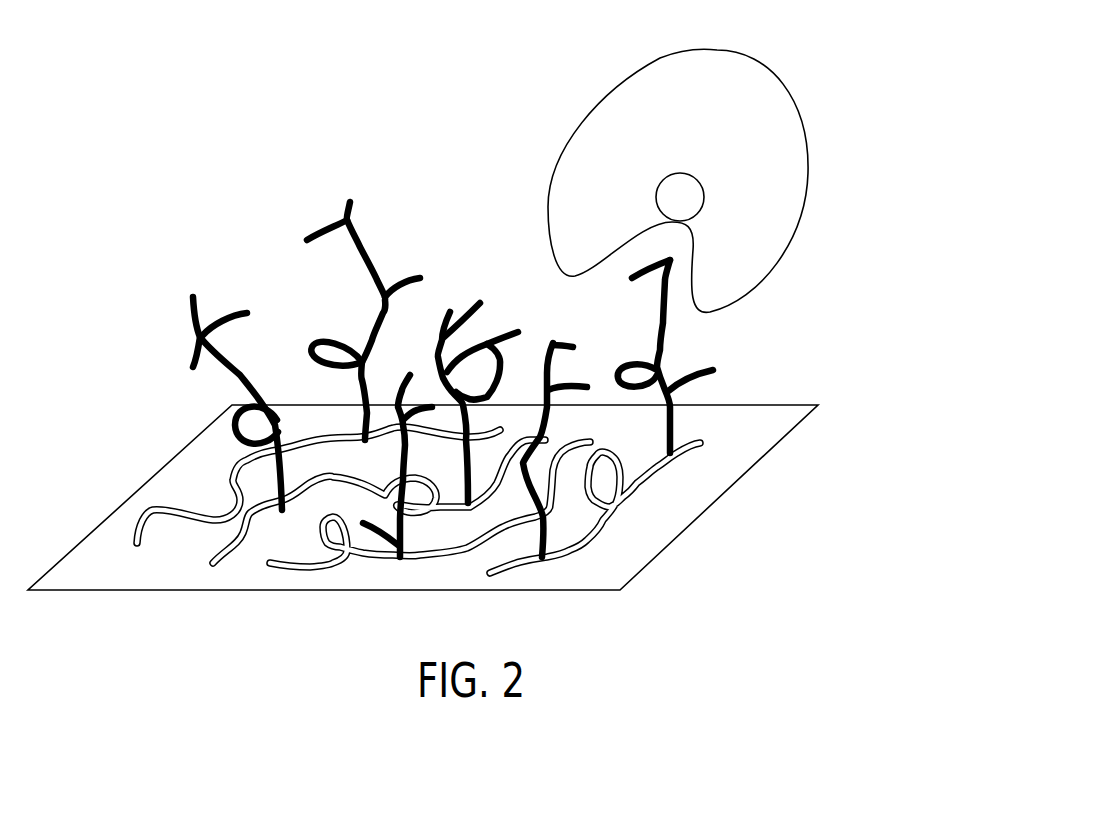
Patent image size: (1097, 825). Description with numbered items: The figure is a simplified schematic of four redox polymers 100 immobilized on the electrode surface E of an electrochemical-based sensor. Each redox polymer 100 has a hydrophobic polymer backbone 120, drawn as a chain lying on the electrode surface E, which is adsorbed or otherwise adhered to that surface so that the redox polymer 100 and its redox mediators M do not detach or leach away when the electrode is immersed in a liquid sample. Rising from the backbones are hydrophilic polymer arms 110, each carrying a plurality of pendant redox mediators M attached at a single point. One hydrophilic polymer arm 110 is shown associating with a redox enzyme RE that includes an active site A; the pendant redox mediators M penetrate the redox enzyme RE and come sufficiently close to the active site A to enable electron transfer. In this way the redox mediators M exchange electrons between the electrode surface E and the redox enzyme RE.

The redox polymer 100 is at (211, 187).
The hydrophilic polymer arm 110 is at (663, 333).
The hydrophobic polymer backbone 120 is at (690, 443).
The electrode surface E is at (153, 570).
The redox enzyme RE is at (772, 153).
The active site A is at (680, 197).
The redox mediator M is at (464, 379).